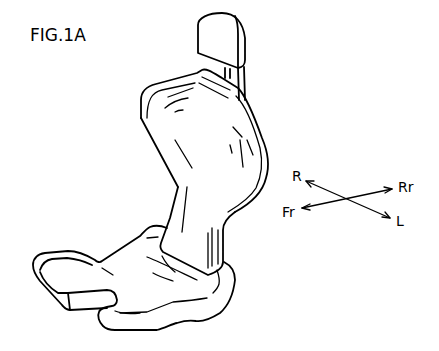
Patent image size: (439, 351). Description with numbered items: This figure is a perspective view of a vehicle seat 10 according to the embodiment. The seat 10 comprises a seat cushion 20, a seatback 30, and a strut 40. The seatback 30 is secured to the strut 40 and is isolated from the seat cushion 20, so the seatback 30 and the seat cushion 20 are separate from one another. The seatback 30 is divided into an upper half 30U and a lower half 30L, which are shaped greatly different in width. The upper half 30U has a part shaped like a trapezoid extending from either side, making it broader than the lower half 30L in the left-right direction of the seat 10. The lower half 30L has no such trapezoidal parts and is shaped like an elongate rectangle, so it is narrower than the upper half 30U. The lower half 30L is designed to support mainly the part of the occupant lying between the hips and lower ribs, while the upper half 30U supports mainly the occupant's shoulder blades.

The seat 10 is at (320, 96).
The seat cushion 20 is at (103, 225).
The seatback 30 is at (142, 133).
The upper half 30U is at (247, 160).
The lower half 30L is at (200, 232).
The strut 40 is at (232, 250).